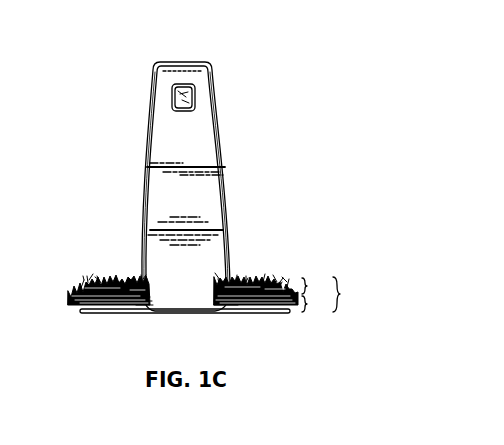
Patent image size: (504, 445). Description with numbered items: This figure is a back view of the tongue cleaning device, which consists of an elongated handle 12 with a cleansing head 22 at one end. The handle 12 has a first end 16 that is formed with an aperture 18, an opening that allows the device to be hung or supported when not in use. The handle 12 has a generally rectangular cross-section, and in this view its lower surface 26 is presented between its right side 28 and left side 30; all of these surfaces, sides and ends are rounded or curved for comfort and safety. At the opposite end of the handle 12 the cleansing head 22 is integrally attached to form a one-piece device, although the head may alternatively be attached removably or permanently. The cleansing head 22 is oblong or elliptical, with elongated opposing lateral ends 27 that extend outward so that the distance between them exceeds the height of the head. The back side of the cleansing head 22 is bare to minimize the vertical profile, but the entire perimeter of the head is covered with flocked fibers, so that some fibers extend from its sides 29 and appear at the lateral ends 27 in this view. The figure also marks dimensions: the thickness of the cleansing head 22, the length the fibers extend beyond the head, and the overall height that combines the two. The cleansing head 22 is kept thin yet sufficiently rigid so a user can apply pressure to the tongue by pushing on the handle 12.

The first end 16 is at (135, 74).
The aperture 18 is at (196, 102).
The left side 30 is at (222, 143).
The lower surface 26 is at (210, 204).
The right side 28 is at (146, 173).
The handle 12 is at (160, 256).
The lateral ends 27 is at (72, 304).
The sides 29 is at (135, 303).
The cleansing head 22 is at (253, 313).